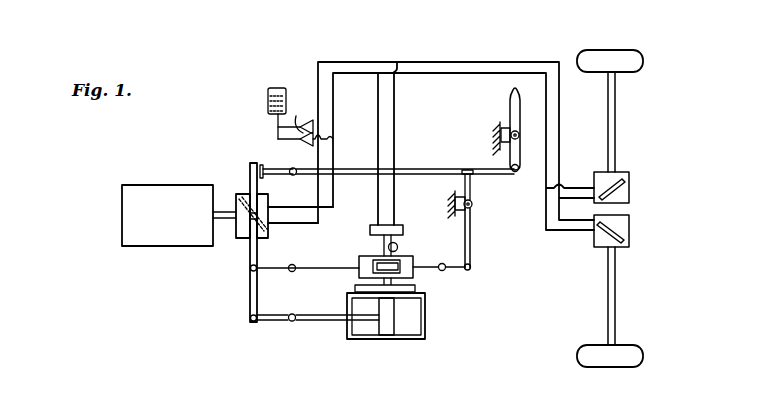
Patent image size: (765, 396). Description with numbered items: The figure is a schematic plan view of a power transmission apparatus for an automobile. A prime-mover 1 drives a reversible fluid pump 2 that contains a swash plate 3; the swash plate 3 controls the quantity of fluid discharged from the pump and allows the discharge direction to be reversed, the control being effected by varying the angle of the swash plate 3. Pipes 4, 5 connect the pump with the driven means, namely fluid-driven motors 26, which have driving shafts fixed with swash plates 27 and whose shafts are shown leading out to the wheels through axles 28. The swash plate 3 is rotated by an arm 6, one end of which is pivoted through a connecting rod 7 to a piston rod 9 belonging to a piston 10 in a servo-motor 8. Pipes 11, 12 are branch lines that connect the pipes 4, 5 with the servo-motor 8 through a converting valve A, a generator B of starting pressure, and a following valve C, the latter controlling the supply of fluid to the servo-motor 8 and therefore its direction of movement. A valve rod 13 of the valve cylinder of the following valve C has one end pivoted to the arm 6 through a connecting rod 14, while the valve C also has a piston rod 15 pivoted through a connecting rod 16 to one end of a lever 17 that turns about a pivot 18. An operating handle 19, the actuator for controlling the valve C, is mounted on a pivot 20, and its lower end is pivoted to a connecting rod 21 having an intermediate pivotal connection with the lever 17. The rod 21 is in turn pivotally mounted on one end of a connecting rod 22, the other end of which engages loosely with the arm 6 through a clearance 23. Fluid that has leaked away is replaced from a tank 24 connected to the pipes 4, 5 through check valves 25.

The prime-mover 1 is at (162, 187).
The reversible fluid pump 2 is at (243, 234).
The swash plate 3 is at (246, 196).
The pipe 4 is at (346, 72).
The pipe 5 is at (392, 61).
The arm 6 is at (250, 297).
The connecting rod 7 is at (277, 323).
The servo-motor 8 is at (372, 340).
The piston rod 9 is at (323, 323).
The piston 10 is at (389, 324).
The branch line 11 is at (377, 120).
The branch line 12 is at (396, 119).
The valve rod 13 is at (327, 270).
The connecting rod 14 is at (288, 271).
The piston rod 15 is at (429, 270).
The connecting rod 16 is at (462, 270).
The lever 17 is at (471, 243).
The pivot 18 is at (473, 205).
The operating handle 19 is at (510, 97).
The pivot 20 is at (523, 132).
The connecting rod 21 is at (443, 167).
The connecting rod 22 is at (288, 168).
The clearance 23 is at (252, 163).
The tank 24 is at (268, 100).
The check valve 25 is at (305, 120).
The fluid-driven motor 26 is at (634, 206).
The swash plate 27 is at (629, 182).
The axle 28 is at (615, 133).
The converting valve A is at (396, 226).
The generator of starting pressure B is at (398, 247).
The following valve C is at (358, 258).